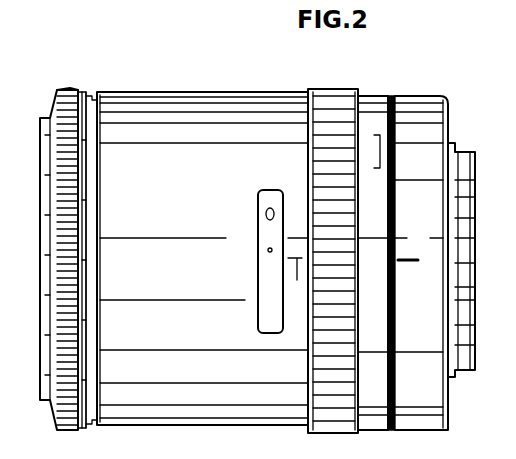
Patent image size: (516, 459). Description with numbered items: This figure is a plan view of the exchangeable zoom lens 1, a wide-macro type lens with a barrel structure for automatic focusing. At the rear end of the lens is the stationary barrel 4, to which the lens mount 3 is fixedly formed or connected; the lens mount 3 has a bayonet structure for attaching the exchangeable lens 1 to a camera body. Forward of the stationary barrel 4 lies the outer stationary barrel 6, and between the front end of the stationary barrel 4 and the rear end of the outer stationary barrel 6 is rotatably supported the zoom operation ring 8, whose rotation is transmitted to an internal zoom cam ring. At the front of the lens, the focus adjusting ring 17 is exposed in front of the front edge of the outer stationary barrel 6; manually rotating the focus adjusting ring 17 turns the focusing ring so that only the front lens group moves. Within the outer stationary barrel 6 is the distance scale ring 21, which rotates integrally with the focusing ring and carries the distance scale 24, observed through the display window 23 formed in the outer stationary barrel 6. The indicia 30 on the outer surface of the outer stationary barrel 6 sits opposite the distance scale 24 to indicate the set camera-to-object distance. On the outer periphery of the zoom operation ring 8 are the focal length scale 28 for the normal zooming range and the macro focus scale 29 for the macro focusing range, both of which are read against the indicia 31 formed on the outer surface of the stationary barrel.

The exchangeable zoom lens 1 is at (173, 82).
The lens mount 3 is at (455, 150).
The stationary barrel 4 is at (428, 110).
The outer stationary barrel 6 is at (226, 100).
The zoom operation ring 8 is at (340, 418).
The focus adjusting ring 17 is at (63, 88).
The distance scale ring 21 is at (266, 197).
The display window 23 is at (266, 214).
The distance scale 24 is at (262, 282).
The focal length scale 28 is at (380, 272).
The macro focus scale 29 is at (378, 128).
The indicia 30 is at (296, 262).
The indicia 31 is at (410, 257).